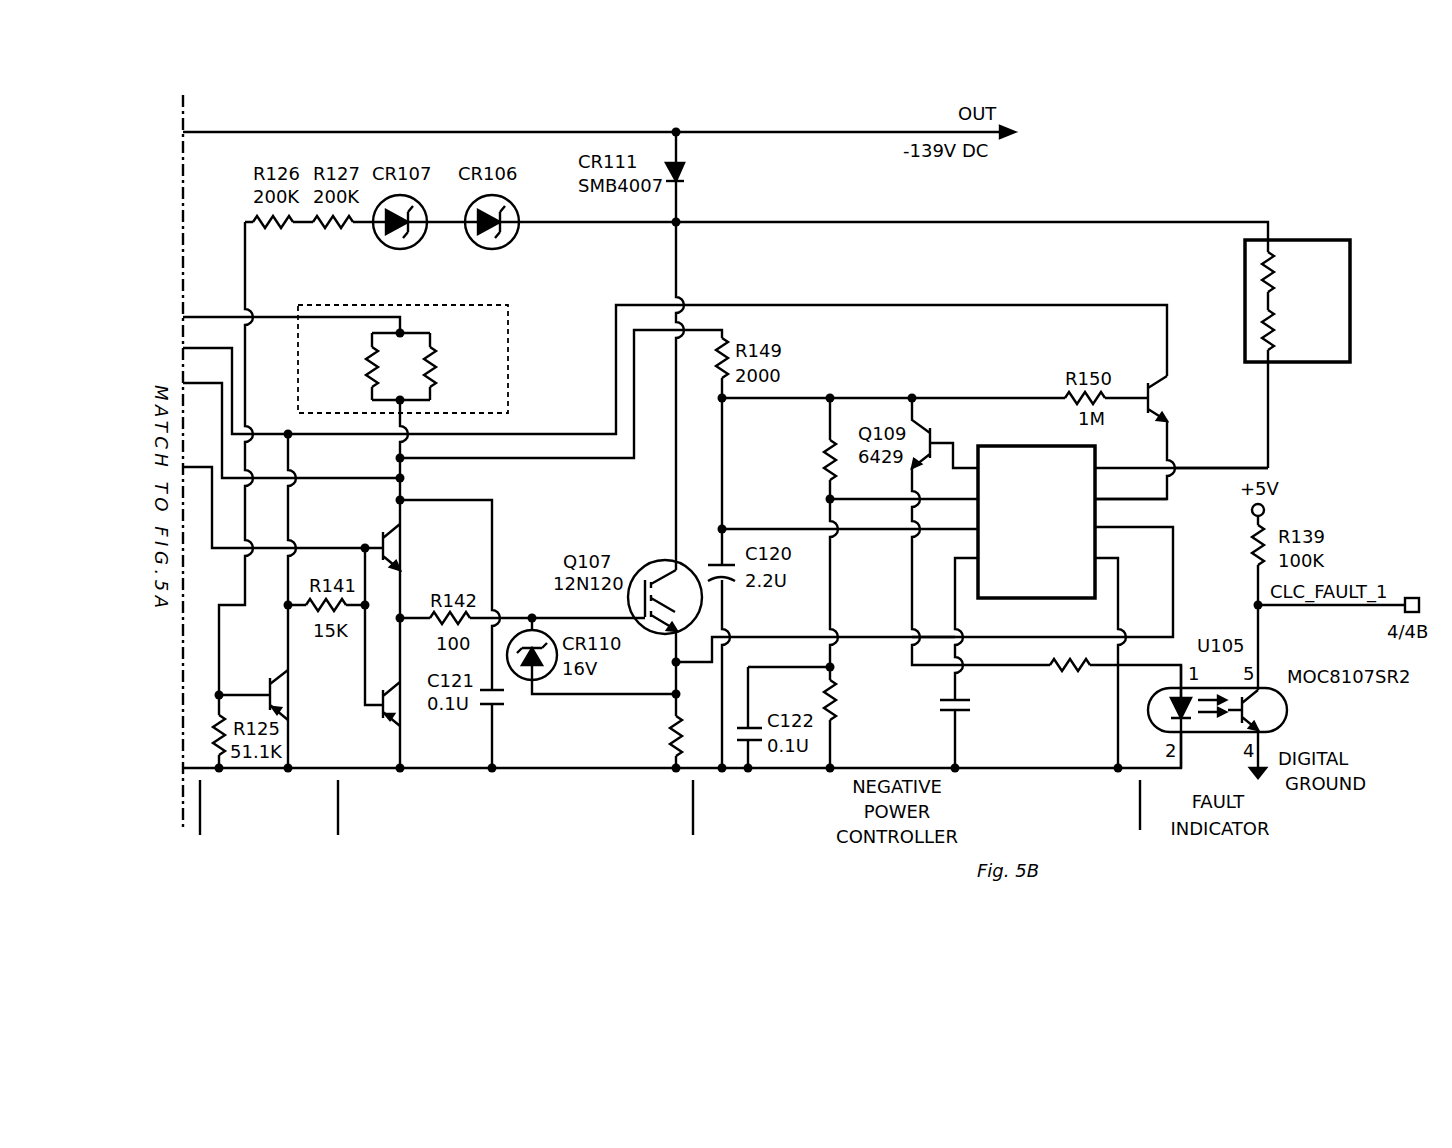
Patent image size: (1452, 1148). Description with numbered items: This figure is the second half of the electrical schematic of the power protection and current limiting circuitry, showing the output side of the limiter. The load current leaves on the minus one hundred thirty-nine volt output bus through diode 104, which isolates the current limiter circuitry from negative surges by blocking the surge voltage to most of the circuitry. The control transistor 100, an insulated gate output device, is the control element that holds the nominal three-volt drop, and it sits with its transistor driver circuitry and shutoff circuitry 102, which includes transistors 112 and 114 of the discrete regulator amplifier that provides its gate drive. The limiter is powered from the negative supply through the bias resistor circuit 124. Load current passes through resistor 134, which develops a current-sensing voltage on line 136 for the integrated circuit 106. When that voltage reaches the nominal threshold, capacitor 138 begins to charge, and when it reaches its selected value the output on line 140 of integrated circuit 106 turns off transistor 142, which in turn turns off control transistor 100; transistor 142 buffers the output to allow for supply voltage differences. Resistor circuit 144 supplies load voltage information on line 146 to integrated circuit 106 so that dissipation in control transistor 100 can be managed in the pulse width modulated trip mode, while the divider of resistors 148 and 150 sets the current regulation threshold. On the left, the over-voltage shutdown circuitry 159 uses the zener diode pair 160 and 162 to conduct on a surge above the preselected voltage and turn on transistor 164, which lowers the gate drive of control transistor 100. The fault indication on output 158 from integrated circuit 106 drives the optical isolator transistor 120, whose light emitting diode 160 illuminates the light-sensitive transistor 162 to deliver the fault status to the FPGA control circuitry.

The control transistor 100 is at (648, 563).
The transistor driver circuitry and shutoff circuitry 102 is at (612, 844).
The diode 104 is at (656, 161).
The integrated circuit 106 is at (1100, 574).
The transistor 112 is at (382, 541).
The transistor 114 is at (396, 712).
The optical isolator transistor 120 is at (1215, 735).
The bias resistor circuit 124 is at (508, 358).
The resistor 134 is at (666, 749).
The line 136 is at (874, 627).
The capacitor 138 is at (963, 713).
The line 140 is at (1148, 502).
The transistor 142 is at (1148, 390).
The resistor circuit 144 is at (1243, 297).
The line 146 is at (1195, 469).
The resistor 148 is at (838, 713).
The resistor 150 is at (829, 455).
The output 158 is at (940, 444).
The over-voltage shutdown circuitry 159 is at (317, 868).
The zener diode 160 is at (490, 250).
The zener diode 162 is at (392, 252).
The transistor 164 is at (272, 683).